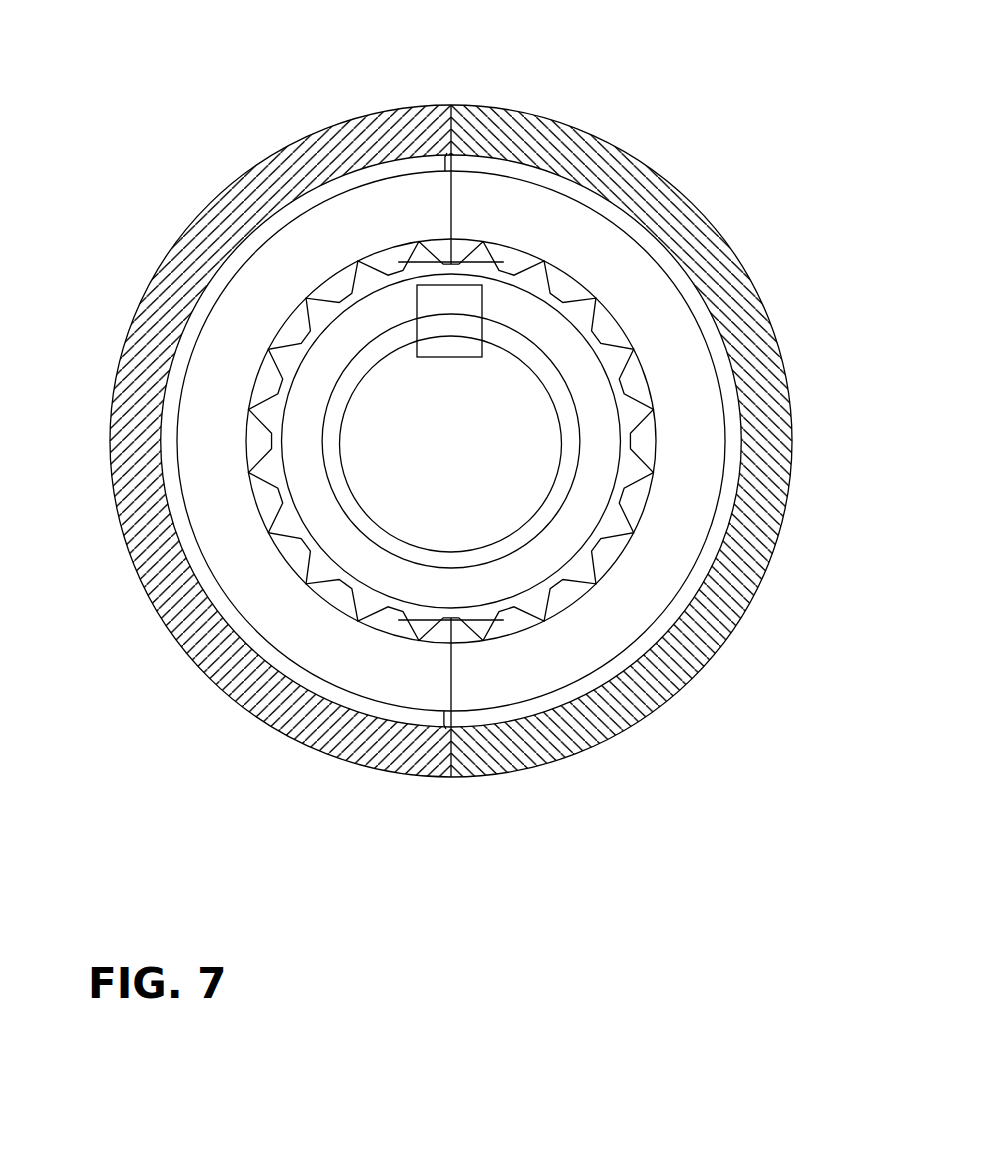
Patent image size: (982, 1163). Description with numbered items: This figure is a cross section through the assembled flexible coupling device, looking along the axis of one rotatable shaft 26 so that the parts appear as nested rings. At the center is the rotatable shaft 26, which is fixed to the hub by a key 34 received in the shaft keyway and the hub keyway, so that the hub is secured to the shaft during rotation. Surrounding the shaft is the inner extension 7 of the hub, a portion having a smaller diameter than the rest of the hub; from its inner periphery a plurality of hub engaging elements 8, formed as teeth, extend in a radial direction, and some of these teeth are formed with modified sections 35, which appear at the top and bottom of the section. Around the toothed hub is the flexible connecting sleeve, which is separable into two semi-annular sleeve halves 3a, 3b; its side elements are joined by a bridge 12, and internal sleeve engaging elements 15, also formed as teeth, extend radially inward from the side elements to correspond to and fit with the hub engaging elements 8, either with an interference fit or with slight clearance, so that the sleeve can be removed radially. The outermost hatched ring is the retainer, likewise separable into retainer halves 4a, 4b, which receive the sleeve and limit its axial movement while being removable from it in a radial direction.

The sleeve half 3a is at (340, 750).
The sleeve half 3b is at (590, 733).
The retainer half 4a is at (193, 445).
The retainer half 4b is at (698, 455).
The inner extension 7 is at (328, 527).
The hub engaging elements 8 is at (320, 307).
The bridge 12 is at (390, 773).
The internal sleeve engaging elements 15 is at (287, 327).
The rotatable shaft 26 is at (451, 444).
The key 34 is at (449, 321).
The modified sections 35 is at (412, 242).